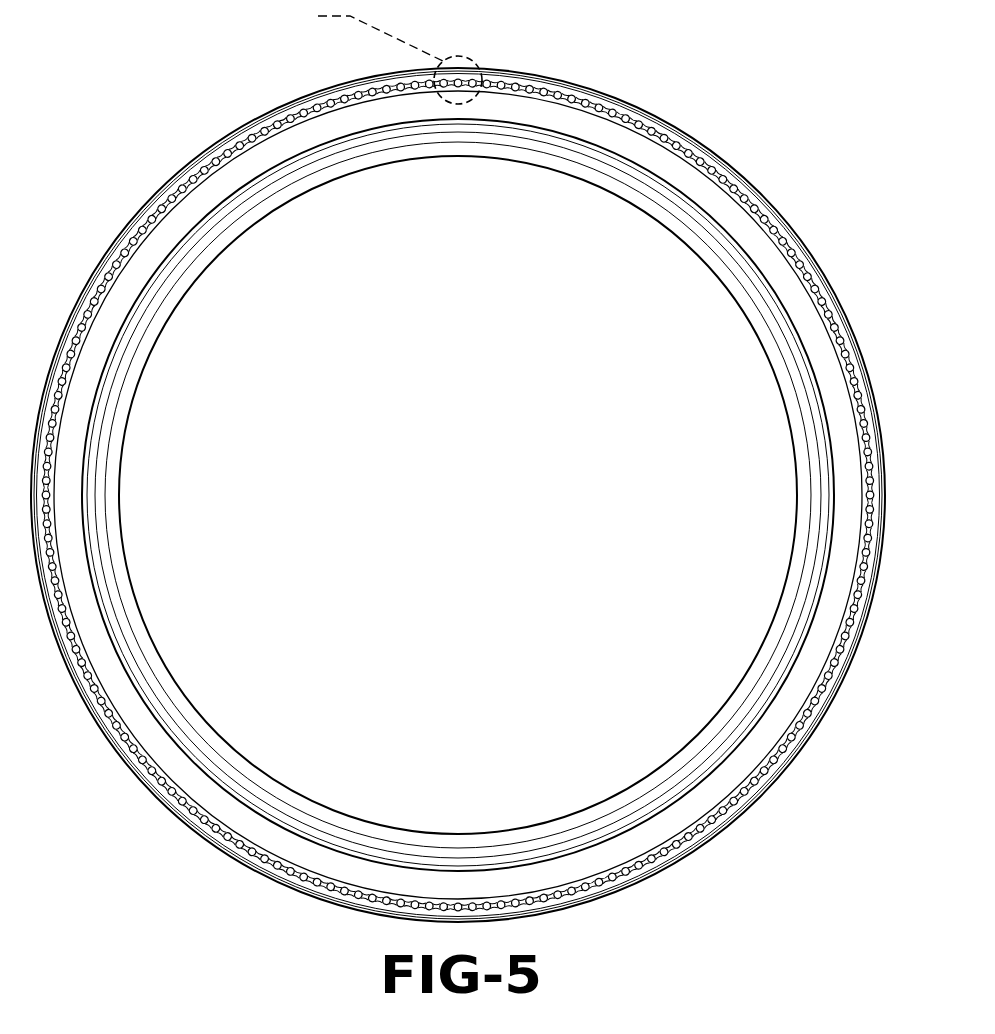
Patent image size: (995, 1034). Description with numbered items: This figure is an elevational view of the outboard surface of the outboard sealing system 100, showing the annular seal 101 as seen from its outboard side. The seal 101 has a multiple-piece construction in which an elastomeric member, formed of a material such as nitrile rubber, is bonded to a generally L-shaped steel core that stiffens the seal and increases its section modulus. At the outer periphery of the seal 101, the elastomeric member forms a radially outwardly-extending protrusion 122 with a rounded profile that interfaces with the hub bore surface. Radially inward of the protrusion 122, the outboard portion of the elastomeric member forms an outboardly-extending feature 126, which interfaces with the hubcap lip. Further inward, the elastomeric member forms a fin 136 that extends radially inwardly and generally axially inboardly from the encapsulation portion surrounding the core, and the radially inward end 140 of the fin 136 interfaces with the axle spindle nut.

The outboard sealing system 100 is at (497, 519).
The seal 101 is at (820, 258).
The radially outwardly-extending protrusion 122 is at (614, 99).
The outboardly-extending feature 126 is at (675, 140).
The fin 136 is at (572, 165).
The radially inward end 140 is at (682, 237).